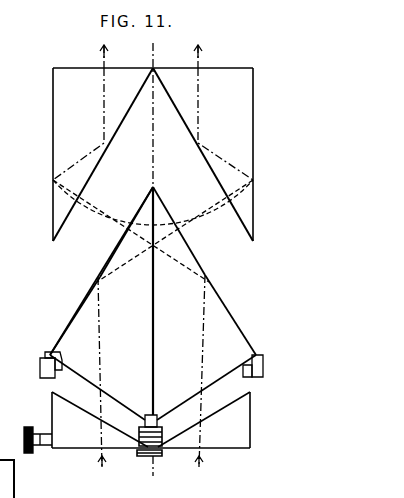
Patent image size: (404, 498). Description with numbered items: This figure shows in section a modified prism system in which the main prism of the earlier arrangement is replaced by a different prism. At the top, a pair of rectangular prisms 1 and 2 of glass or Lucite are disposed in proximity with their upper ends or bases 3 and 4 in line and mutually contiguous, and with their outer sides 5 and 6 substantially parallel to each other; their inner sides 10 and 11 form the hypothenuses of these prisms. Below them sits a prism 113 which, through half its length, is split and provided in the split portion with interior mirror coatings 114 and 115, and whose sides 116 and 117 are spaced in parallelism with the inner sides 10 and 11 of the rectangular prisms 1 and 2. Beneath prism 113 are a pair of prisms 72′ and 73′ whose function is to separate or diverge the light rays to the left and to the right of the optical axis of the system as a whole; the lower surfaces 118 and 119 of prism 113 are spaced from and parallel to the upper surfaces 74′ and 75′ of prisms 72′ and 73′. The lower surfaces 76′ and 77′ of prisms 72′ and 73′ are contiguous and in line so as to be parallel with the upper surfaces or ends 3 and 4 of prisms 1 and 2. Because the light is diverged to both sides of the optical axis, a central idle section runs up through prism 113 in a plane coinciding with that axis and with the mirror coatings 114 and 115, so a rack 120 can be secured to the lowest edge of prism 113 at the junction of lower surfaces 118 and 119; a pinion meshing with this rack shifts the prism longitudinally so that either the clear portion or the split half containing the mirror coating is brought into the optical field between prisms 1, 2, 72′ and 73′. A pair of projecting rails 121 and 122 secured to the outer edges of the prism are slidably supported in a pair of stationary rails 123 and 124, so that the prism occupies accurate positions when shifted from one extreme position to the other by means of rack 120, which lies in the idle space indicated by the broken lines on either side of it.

The rectangular prism 1 is at (53, 69).
The rectangular prism 2 is at (253, 70).
The upper end or base 3 is at (131, 66).
The upper end or base 4 is at (173, 66).
The outer side 5 is at (53, 122).
The outer side 6 is at (253, 128).
The inner side 10 is at (110, 141).
The inner side 11 is at (196, 141).
The prism 113 is at (68, 322).
The interior mirror coating 114 is at (139, 212).
The interior mirror coating 115 is at (176, 206).
The side 116 is at (88, 300).
The side 117 is at (232, 325).
The lower surface 118 is at (79, 373).
The lower surface 119 is at (206, 387).
The rack 120 is at (148, 418).
The projecting rail 121 is at (47, 352).
The projecting rail 122 is at (264, 351).
The stationary rail 123 is at (40, 377).
The stationary rail 124 is at (263, 379).
The prism 72′ is at (52, 405).
The prism 73′ is at (245, 425).
The upper surface 74′ is at (100, 419).
The upper surface 75′ is at (252, 381).
The lower surface 76′ is at (73, 448).
The lower surface 77′ is at (227, 448).